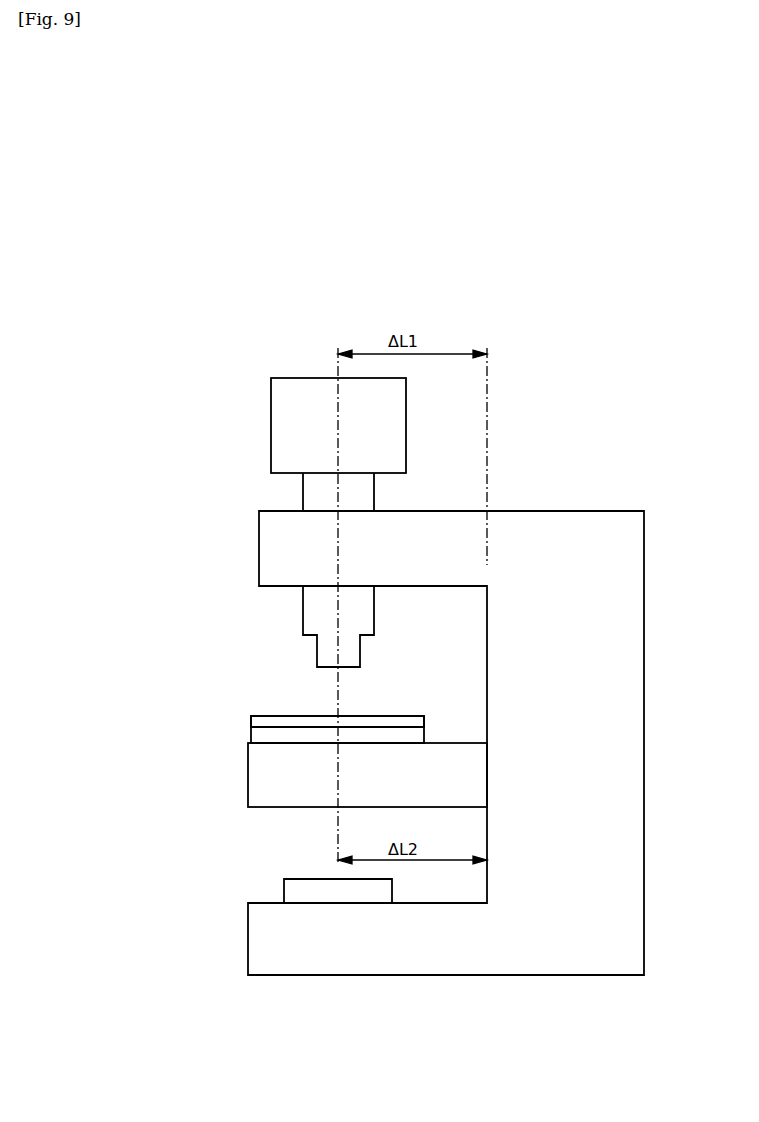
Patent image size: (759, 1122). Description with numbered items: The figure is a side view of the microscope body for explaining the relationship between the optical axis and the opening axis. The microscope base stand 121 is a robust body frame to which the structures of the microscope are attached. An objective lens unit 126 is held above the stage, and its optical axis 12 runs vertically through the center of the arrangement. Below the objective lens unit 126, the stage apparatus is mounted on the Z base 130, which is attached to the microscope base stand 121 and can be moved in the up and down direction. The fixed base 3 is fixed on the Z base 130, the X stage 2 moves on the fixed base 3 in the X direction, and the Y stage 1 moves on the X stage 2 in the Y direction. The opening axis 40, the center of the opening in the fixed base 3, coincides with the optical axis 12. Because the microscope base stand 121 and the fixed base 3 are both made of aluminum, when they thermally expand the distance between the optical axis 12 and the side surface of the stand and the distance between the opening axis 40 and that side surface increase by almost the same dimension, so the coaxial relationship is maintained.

The Y stage 1 is at (251, 721).
The X stage 2 is at (337, 721).
The fixed base 3 is at (251, 735).
The optical axis 12 is at (337, 435).
The opening axis 40 is at (337, 837).
The microscope base stand 121 is at (577, 511).
The objective lens unit 126 is at (317, 652).
The Z base 130 is at (247, 781).